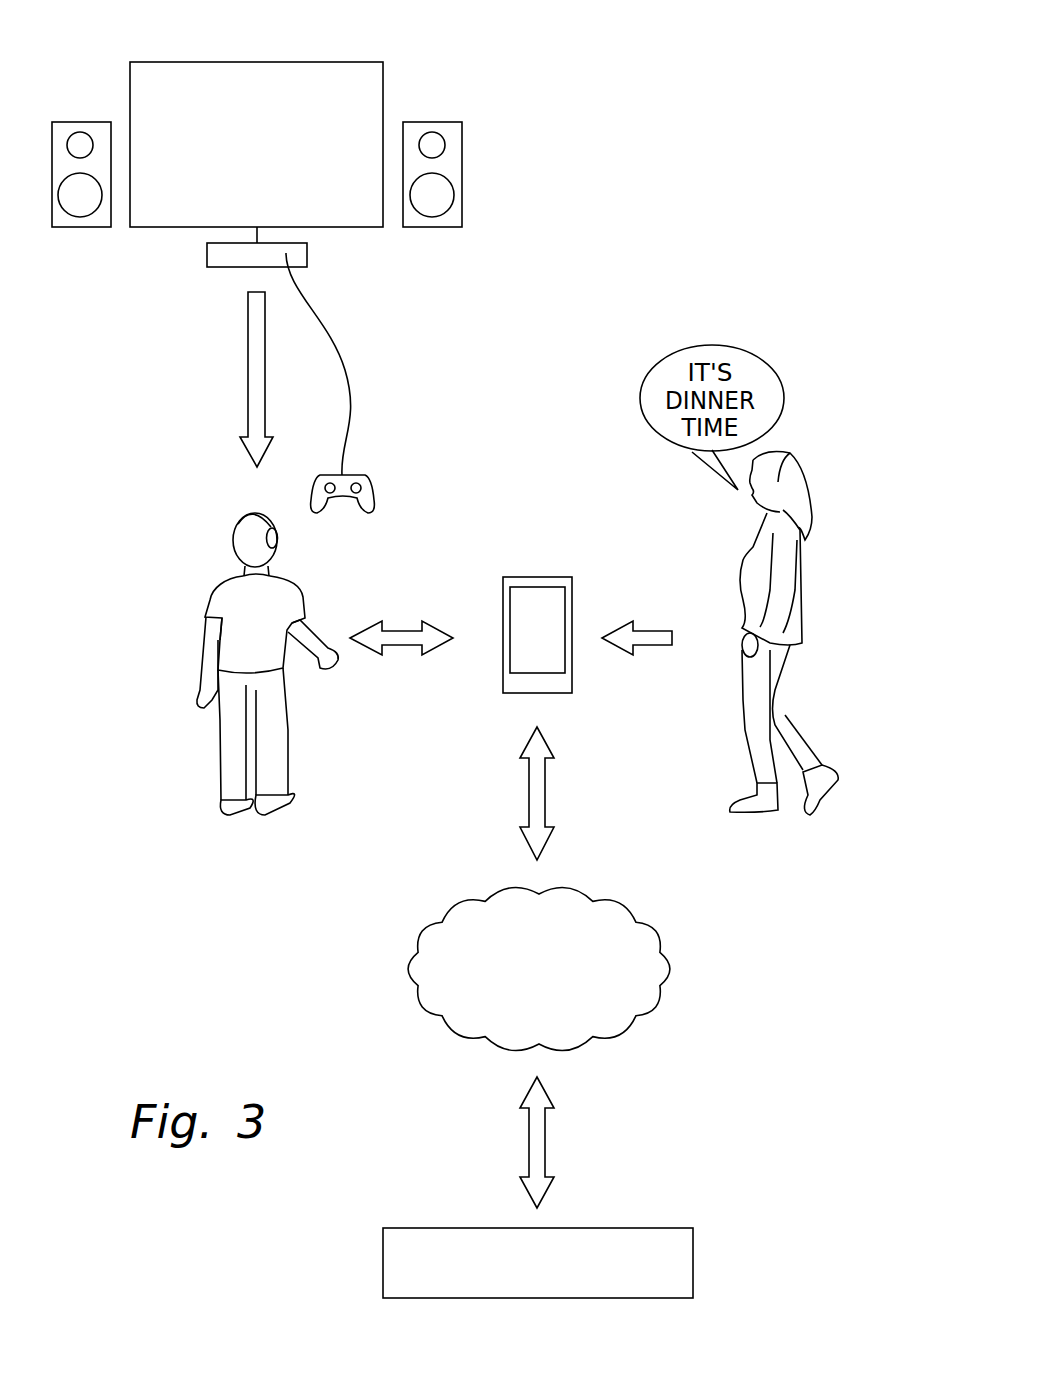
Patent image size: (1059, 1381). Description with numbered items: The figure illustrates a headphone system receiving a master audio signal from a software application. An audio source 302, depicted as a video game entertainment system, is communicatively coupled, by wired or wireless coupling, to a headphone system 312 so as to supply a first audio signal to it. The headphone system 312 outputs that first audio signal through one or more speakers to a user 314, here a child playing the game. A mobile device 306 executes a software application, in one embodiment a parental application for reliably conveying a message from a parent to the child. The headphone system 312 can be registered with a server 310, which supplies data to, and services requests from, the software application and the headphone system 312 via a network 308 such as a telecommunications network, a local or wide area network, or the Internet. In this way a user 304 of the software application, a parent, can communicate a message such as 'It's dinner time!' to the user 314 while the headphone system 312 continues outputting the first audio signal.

The audio source 302 is at (252, 62).
The user of the software application 304 is at (803, 567).
The mobile device 306 is at (535, 577).
The network 308 is at (675, 965).
The server 310 is at (693, 1257).
The headphone system 312 is at (280, 542).
The user of the headphone system 314 is at (213, 590).